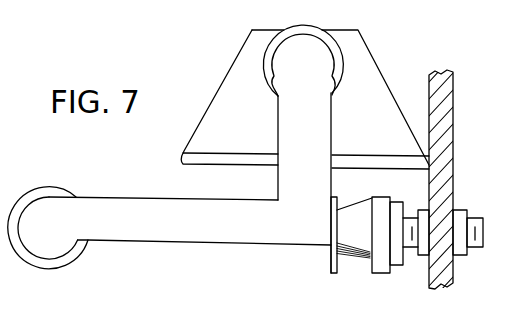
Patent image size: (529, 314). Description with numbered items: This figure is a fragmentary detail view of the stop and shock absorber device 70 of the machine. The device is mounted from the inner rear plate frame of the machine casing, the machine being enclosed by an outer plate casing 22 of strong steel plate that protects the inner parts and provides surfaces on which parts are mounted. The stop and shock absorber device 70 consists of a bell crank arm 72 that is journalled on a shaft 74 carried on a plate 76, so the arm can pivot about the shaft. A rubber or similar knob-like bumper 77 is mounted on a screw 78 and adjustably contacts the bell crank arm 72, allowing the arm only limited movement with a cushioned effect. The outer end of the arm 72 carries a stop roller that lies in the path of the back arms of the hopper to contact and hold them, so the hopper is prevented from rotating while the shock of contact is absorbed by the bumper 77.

The outer plate casing 22 is at (438, 151).
The stop and shock absorber device 70 is at (289, 236).
The bell crank arm 72 is at (169, 228).
The shaft 74 is at (300, 53).
The plate 76 is at (237, 86).
The bumper 77 is at (368, 257).
The screw 78 is at (466, 214).